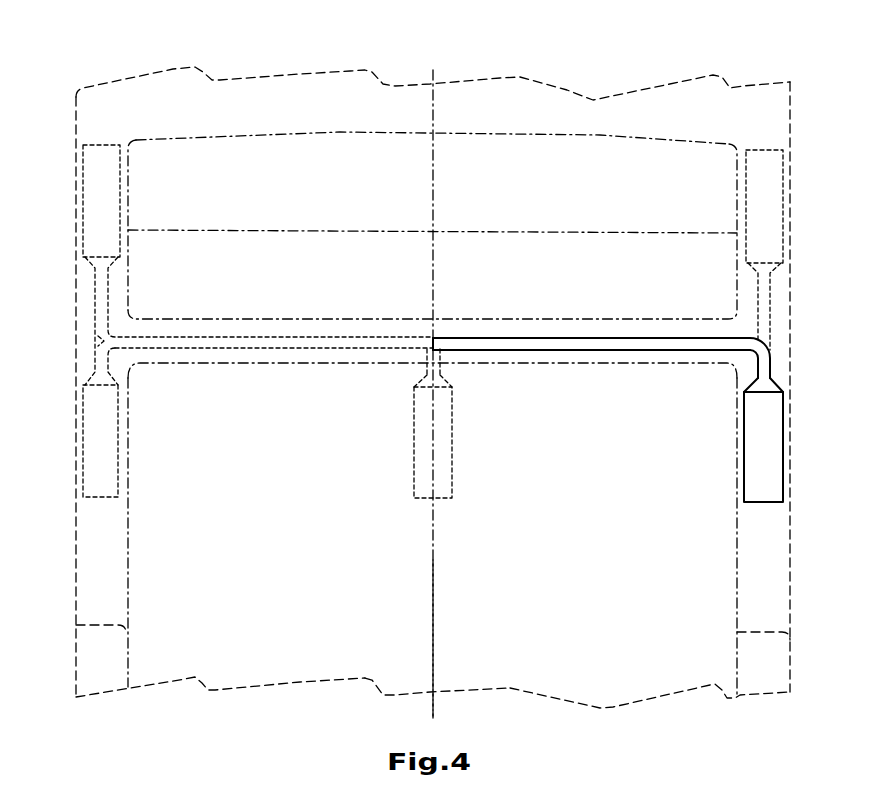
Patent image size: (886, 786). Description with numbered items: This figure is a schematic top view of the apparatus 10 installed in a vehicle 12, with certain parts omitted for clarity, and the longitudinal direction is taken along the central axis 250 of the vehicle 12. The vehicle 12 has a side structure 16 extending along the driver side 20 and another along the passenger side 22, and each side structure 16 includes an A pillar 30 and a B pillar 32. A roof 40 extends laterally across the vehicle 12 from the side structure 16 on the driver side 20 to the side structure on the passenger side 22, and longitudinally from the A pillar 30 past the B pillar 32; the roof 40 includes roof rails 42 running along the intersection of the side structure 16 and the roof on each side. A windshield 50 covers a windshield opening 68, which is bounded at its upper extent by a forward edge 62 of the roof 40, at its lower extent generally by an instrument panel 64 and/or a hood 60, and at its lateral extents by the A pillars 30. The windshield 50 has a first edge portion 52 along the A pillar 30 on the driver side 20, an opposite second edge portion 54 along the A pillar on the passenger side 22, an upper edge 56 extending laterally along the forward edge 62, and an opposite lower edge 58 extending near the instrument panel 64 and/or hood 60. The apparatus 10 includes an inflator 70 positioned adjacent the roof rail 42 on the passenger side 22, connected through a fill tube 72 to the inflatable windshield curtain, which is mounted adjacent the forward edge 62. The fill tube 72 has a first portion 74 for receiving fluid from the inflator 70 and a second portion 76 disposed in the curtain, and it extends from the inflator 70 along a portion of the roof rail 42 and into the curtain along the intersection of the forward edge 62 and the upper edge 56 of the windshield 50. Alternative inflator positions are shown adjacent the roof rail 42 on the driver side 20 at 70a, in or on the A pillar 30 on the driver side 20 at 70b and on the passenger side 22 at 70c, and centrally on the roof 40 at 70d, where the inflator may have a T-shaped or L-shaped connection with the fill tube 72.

The apparatus 10 is at (808, 373).
The vehicle 12 is at (432, 392).
The side structure 16 is at (95, 518).
The driver side 20 is at (168, 706).
The passenger side 22 is at (610, 713).
The A pillar 30 is at (83, 273).
The B pillar 32 is at (95, 655).
The roof 40 is at (433, 694).
The roof rail 42 is at (97, 538).
The windshield 50 is at (483, 165).
The first edge portion 52 is at (128, 212).
The second edge portion 54 is at (742, 207).
The upper edge 56 is at (342, 318).
The lower edge 58 is at (332, 133).
The hood 60 is at (265, 108).
The forward edge 62 is at (577, 363).
The instrument panel 64 is at (494, 195).
The windshield opening 68 is at (435, 184).
The inflator 70 is at (765, 442).
The inflator alternative position adjacent driver side roof rail 70a is at (97, 450).
The inflator alternative position on driver side A pillar 70b is at (118, 172).
The inflator alternative position on passenger side A pillar 70c is at (765, 207).
The inflator alternative position centrally on roof 70d is at (440, 428).
The fill tube 72 is at (638, 345).
The first portion 74 is at (762, 358).
The second portion 76 is at (570, 338).
The central axis 250 is at (432, 602).